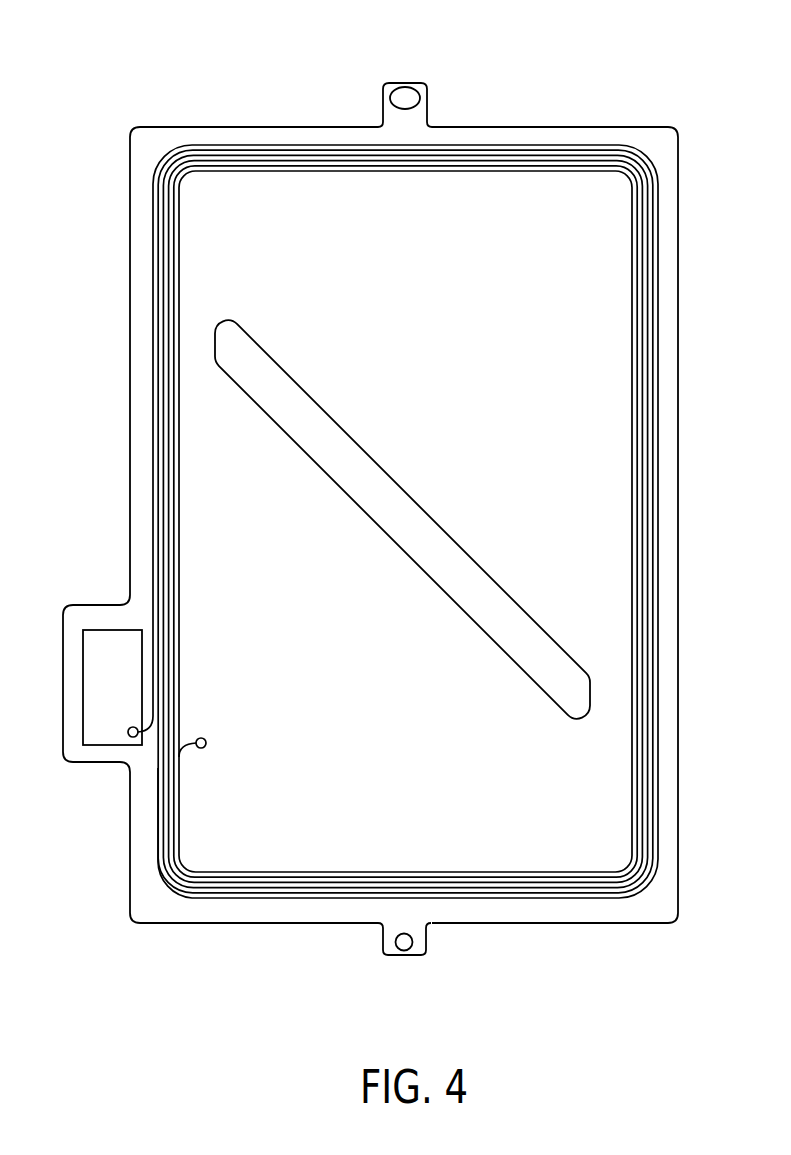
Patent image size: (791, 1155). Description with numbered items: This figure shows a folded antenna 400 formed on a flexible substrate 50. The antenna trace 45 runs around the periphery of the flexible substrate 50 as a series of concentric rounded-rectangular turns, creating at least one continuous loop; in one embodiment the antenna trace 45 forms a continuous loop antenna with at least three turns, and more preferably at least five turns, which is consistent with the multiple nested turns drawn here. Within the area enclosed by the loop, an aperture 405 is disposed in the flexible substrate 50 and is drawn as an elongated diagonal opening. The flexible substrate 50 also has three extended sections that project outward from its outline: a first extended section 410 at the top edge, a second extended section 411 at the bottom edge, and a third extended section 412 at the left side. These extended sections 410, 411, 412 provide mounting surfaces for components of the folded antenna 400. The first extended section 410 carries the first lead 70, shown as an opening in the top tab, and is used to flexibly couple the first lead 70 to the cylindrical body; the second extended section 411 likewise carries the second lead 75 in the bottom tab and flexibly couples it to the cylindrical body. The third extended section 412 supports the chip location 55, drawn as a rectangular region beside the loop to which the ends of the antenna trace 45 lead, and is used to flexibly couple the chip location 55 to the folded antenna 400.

The folded antenna 400 is at (720, 103).
The antenna trace 45 is at (657, 553).
The flexible substrate 50 is at (570, 227).
The chip location 55 is at (83, 686).
The first lead 70 is at (404, 97).
The second lead 75 is at (403, 948).
The aperture 405 is at (421, 503).
The first extended section 410 is at (445, 79).
The second extended section 411 is at (445, 965).
The third extended section 412 is at (58, 777).